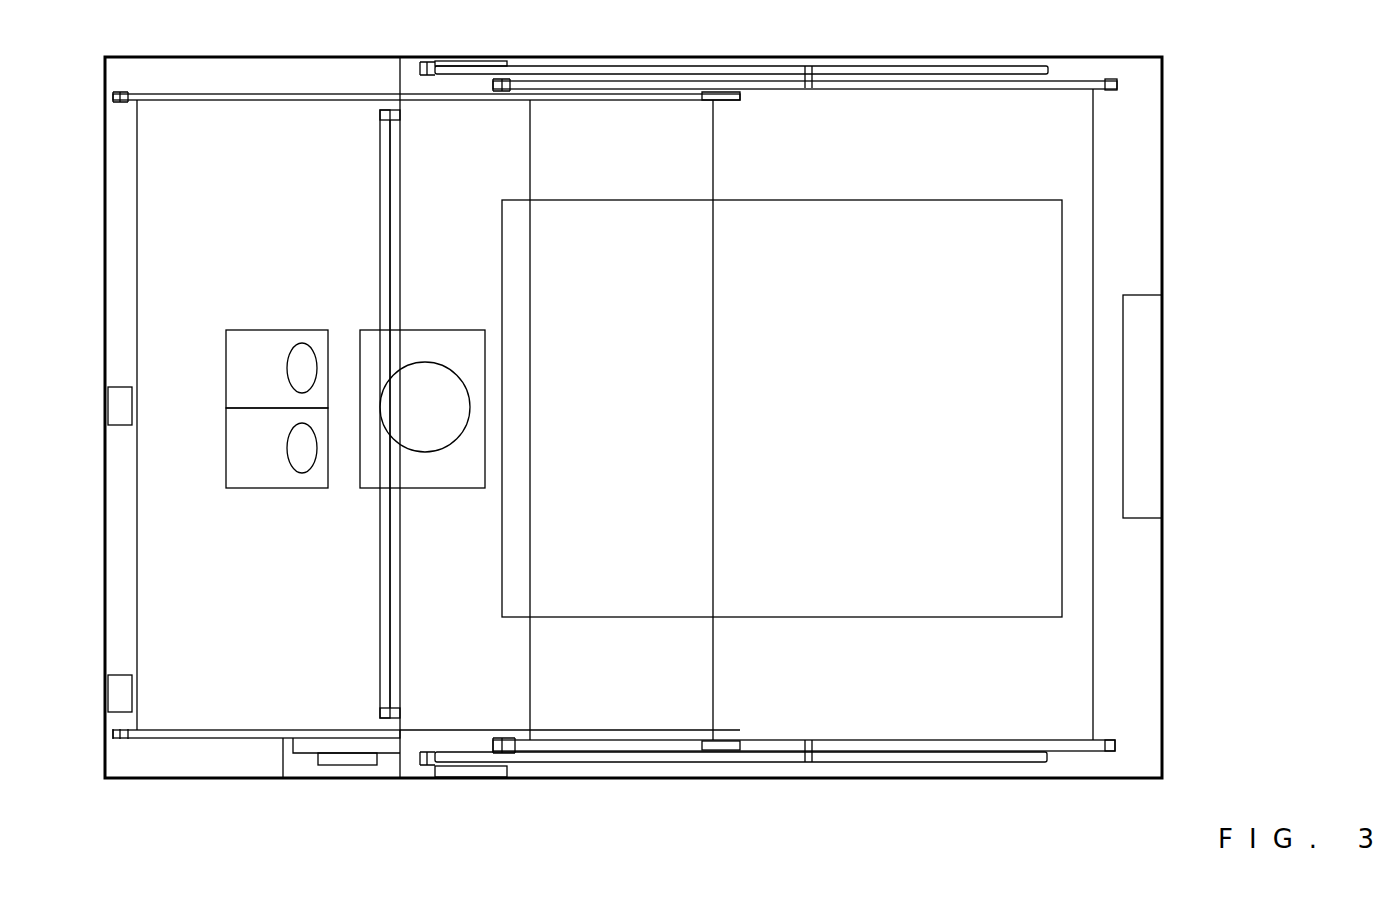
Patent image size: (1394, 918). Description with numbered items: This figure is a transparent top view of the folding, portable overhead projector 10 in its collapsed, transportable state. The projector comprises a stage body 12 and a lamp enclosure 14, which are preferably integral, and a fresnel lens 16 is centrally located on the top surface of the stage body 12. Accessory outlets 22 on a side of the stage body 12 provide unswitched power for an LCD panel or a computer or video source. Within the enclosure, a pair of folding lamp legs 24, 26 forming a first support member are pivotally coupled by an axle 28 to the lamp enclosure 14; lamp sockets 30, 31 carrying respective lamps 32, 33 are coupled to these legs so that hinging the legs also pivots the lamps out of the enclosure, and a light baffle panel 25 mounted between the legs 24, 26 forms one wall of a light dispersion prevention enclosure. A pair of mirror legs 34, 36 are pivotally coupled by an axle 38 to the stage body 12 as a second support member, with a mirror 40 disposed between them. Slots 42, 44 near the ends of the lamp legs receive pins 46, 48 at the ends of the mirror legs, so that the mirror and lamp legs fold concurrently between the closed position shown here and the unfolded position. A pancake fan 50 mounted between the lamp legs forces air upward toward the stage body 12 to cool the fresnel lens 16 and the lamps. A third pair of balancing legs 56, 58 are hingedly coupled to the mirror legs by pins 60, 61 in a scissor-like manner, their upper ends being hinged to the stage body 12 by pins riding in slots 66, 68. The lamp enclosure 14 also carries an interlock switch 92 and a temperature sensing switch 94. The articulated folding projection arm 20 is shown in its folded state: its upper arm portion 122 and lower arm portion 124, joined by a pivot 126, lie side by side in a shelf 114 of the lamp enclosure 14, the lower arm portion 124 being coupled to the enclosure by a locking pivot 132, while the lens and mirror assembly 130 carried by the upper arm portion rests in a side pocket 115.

The overhead projector 10 is at (245, 812).
The stage body 12 is at (610, 66).
The lamp enclosure 14 is at (258, 57).
The fresnel lens 16 is at (843, 542).
The articulated folding projection arm 20 is at (363, 417).
The accessory outlets 22 is at (1155, 388).
The lamp leg 24 is at (240, 730).
The light baffle panel 25 is at (237, 616).
The lamp leg 26 is at (262, 101).
The axle 28 is at (126, 94).
The lamp socket 30 is at (276, 488).
The lamp socket 31 is at (276, 330).
The lamp 32 is at (294, 448).
The lamp 33 is at (294, 364).
The mirror leg 34 is at (972, 740).
The mirror leg 36 is at (936, 90).
The axle 38 is at (1108, 91).
The mirror 40 is at (840, 687).
The slot 42 is at (632, 740).
The slot 44 is at (654, 101).
The pin 46 is at (500, 740).
The pin 48 is at (503, 92).
The pancake fan 50 is at (428, 488).
The balancing leg 56 is at (960, 763).
The balancing leg 58 is at (892, 66).
The pin 60 is at (806, 763).
The pin 61 is at (809, 66).
The slot 66 is at (452, 778).
The slot 68 is at (447, 62).
The interlock switch 92 is at (122, 706).
The temperature sensing switch 94 is at (122, 402).
The shelf 114 is at (380, 560).
The side pocket 115 is at (312, 766).
The upper arm portion 122 is at (392, 228).
The lower arm portion 124 is at (382, 182).
The pivot 126 is at (392, 120).
The lens and mirror assembly 130 is at (343, 718).
The locking pivot 132 is at (395, 706).